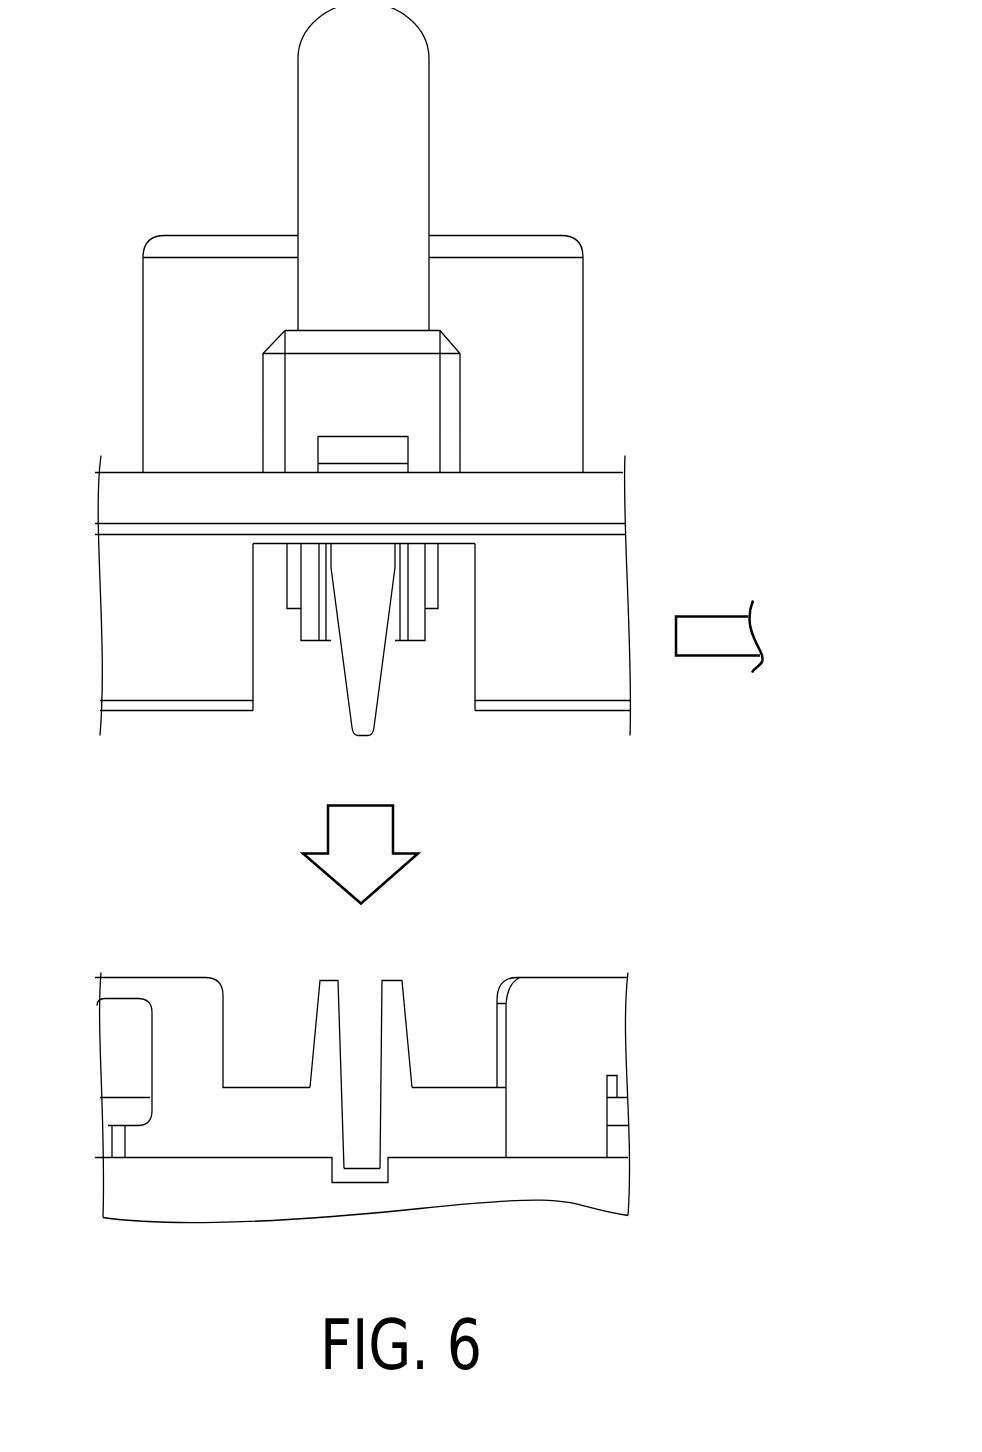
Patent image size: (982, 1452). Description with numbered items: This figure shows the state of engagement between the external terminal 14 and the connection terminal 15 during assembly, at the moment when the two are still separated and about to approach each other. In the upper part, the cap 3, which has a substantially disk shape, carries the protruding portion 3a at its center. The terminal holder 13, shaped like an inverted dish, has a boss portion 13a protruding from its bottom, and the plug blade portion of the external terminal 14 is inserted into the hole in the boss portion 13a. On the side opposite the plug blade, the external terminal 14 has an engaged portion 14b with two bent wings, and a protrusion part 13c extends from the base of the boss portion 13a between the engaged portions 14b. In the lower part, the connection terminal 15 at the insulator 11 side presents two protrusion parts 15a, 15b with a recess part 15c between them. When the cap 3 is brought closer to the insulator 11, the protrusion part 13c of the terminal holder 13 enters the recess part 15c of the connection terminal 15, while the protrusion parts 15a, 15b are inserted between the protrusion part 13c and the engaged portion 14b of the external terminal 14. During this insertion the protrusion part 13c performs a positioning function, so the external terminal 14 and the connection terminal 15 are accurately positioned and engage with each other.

The cap 3 is at (578, 497).
The protruding portion 3a is at (523, 275).
The insulator 11 is at (562, 1173).
The terminal holder 13 is at (563, 683).
The boss portion 13a is at (333, 389).
The protrusion part 13c is at (365, 701).
The external terminal 14 is at (392, 106).
The engaged portion 14b is at (310, 628).
The connection terminal 15 is at (253, 1107).
The protrusion part 15a is at (329, 990).
The protrusion part 15b is at (393, 1028).
The recess part 15c is at (357, 1010).